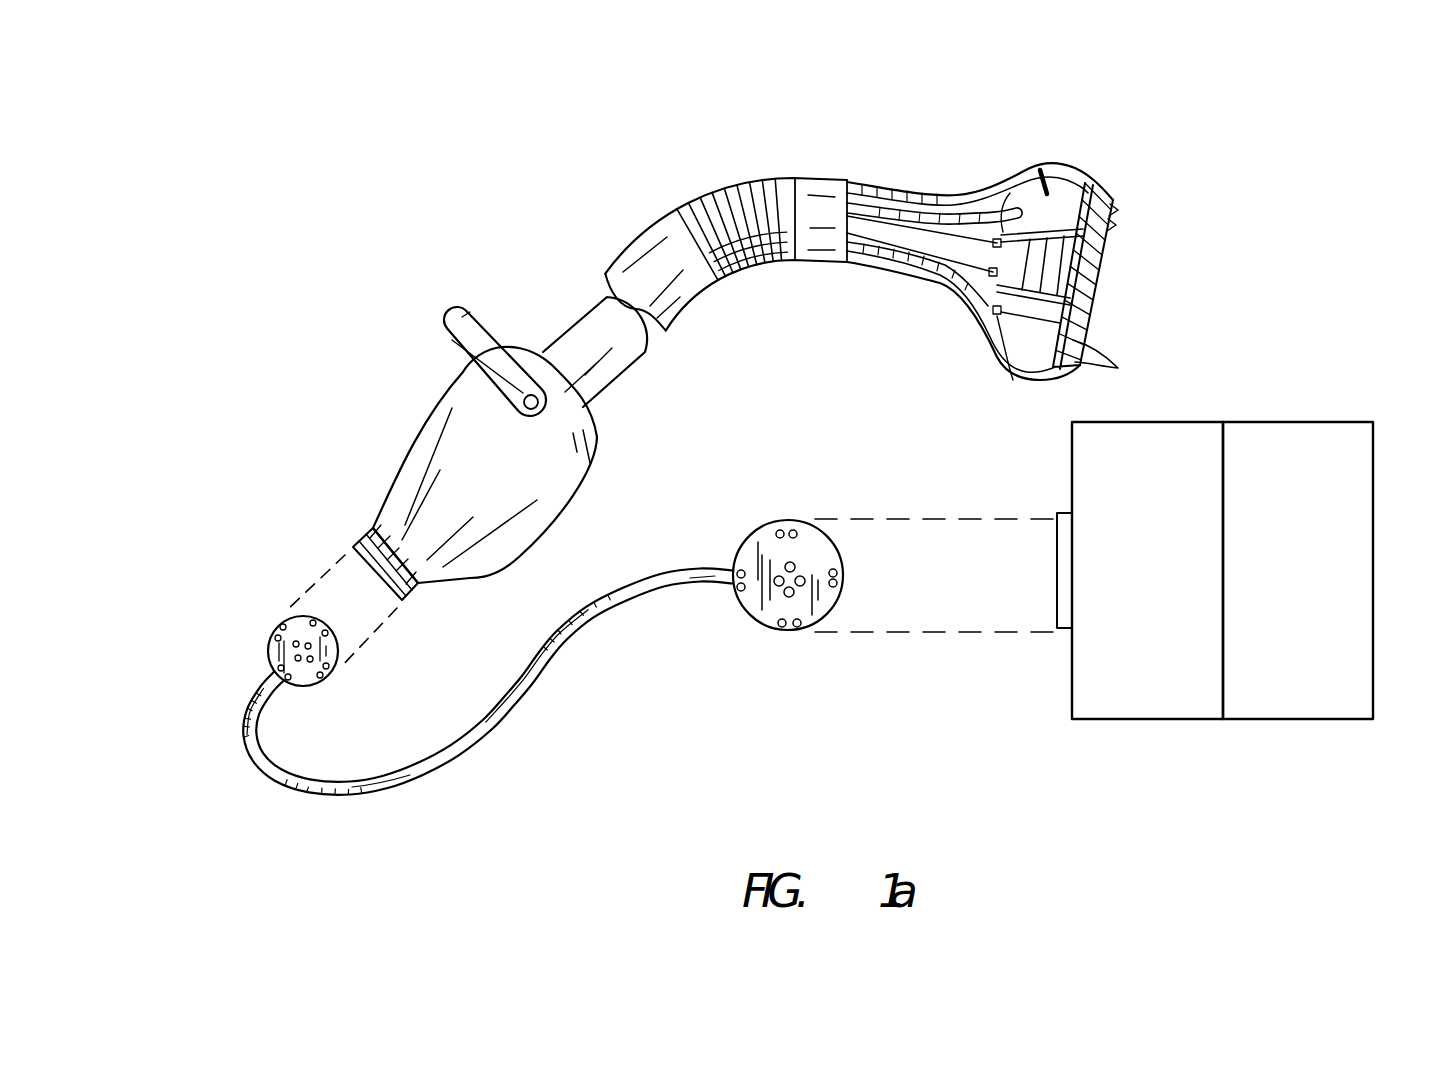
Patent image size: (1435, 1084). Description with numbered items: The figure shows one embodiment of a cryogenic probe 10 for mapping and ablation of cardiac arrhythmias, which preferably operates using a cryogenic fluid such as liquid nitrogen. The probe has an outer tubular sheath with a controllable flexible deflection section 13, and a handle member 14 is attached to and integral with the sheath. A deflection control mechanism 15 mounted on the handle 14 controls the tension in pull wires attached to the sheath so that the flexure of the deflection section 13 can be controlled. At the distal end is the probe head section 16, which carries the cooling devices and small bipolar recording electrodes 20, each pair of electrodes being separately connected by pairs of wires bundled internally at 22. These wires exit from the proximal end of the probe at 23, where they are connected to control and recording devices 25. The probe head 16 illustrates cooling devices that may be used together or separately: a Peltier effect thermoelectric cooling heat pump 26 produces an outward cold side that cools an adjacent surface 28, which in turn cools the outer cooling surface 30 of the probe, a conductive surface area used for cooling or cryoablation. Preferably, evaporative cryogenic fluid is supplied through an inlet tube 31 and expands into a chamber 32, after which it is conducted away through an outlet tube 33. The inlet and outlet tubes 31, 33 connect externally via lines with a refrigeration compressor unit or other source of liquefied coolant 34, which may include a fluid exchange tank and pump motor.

The cryogenic probe 10 is at (515, 253).
The controllable flexible deflection section 13 is at (733, 190).
The handle member 14 is at (412, 405).
The deflection control mechanism 15 is at (441, 322).
The probe head section 16 is at (1066, 152).
The bipolar recording electrodes 20 is at (1090, 364).
The internally bundled wires 22 is at (878, 188).
The proximal wire exit 23 is at (893, 518).
The control/recording devices 25 is at (1297, 422).
The thermoelectric cooling heat pump 26 is at (1082, 323).
The adjacent surface 28 is at (1098, 240).
The cooling surface 30 is at (1094, 297).
The inlet tube 31 is at (1024, 173).
The chamber 32 is at (1041, 172).
The outlet tube 33 is at (1006, 377).
The refrigeration compressor unit or source of liquefied coolant 34 is at (1170, 422).